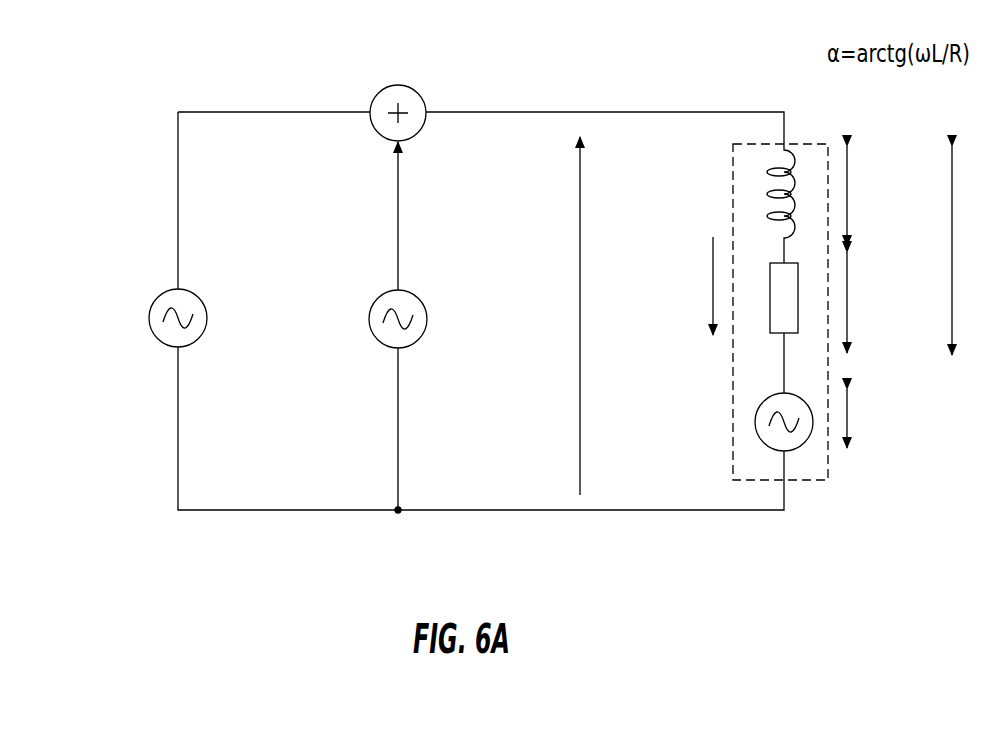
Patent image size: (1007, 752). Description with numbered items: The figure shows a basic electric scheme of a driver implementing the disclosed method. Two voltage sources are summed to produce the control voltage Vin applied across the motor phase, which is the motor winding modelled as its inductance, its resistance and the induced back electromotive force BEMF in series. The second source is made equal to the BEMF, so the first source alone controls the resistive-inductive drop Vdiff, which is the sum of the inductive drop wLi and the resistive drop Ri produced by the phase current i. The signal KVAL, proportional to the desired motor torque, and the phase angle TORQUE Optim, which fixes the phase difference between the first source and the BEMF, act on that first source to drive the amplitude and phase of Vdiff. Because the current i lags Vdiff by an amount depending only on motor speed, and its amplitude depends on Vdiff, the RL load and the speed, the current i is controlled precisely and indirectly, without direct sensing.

The KVAL torque signal KVAL is at (272, 319).
The Torque Optim phase angle TORQUE is at (154, 341).
The control voltage Vin is at (599, 316).
The phase current i is at (705, 286).
The inductive voltage drop wLi is at (885, 196).
The resistive voltage drop Ri is at (877, 302).
The back electromotive force BEMF is at (877, 418).
The resistive-inductive voltage drop Vdiff is at (977, 250).